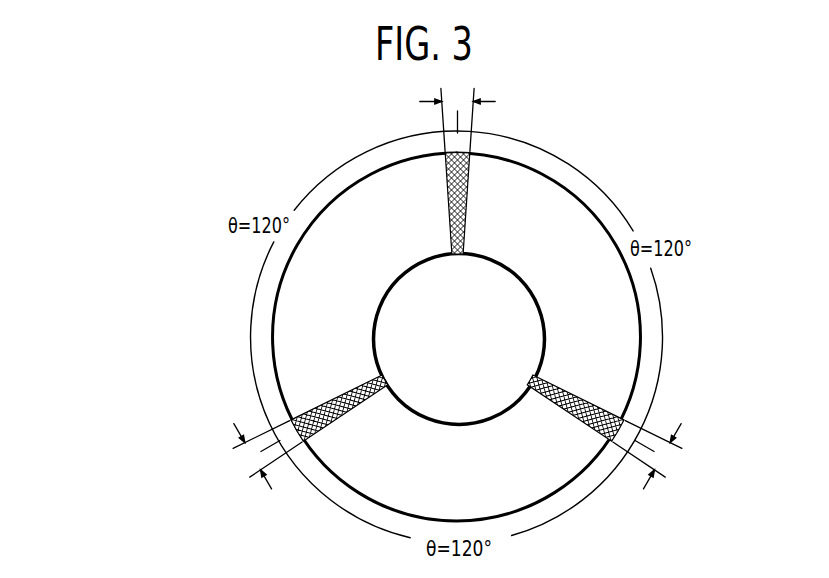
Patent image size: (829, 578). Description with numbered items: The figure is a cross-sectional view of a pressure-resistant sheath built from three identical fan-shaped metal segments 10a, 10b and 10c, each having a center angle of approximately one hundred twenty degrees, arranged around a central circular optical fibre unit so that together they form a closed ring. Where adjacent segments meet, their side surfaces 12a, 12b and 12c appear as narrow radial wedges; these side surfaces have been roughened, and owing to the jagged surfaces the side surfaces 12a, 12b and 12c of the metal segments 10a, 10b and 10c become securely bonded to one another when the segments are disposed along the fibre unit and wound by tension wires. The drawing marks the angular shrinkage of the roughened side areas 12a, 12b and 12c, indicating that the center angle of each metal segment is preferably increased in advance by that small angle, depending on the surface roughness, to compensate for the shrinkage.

The metal segment 10a is at (575, 235).
The metal segment 10b is at (530, 470).
The metal segment 10c is at (365, 207).
The side surface 12a is at (583, 402).
The side surface 12b is at (335, 402).
The side surface 12c is at (465, 195).